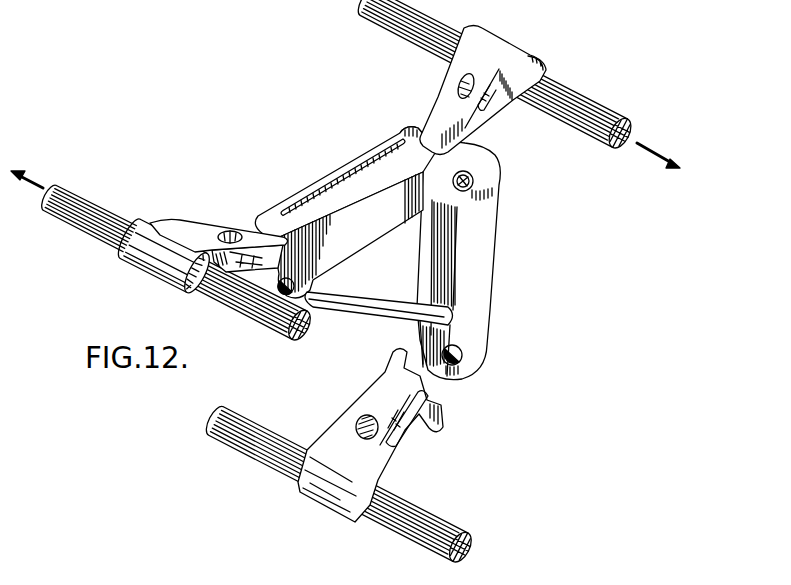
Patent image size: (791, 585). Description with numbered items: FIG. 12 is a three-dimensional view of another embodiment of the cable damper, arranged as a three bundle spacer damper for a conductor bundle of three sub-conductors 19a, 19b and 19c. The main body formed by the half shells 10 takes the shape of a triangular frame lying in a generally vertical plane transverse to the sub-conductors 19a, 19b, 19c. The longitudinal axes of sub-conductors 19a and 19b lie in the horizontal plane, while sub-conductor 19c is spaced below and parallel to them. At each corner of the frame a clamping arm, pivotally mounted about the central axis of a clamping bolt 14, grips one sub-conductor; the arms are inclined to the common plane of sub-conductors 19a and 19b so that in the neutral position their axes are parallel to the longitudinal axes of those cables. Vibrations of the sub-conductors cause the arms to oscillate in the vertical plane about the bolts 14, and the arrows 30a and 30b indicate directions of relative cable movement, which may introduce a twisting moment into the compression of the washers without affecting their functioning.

The half shells 10 is at (484, 258).
The clamping bolts 14 is at (488, 182).
The sub-conductor 19a is at (127, 211).
The sub-conductor 19b is at (598, 108).
The sub-conductor 19c is at (450, 524).
The direction of cable movement 30a is at (42, 187).
The direction of cable movement 30b is at (667, 133).